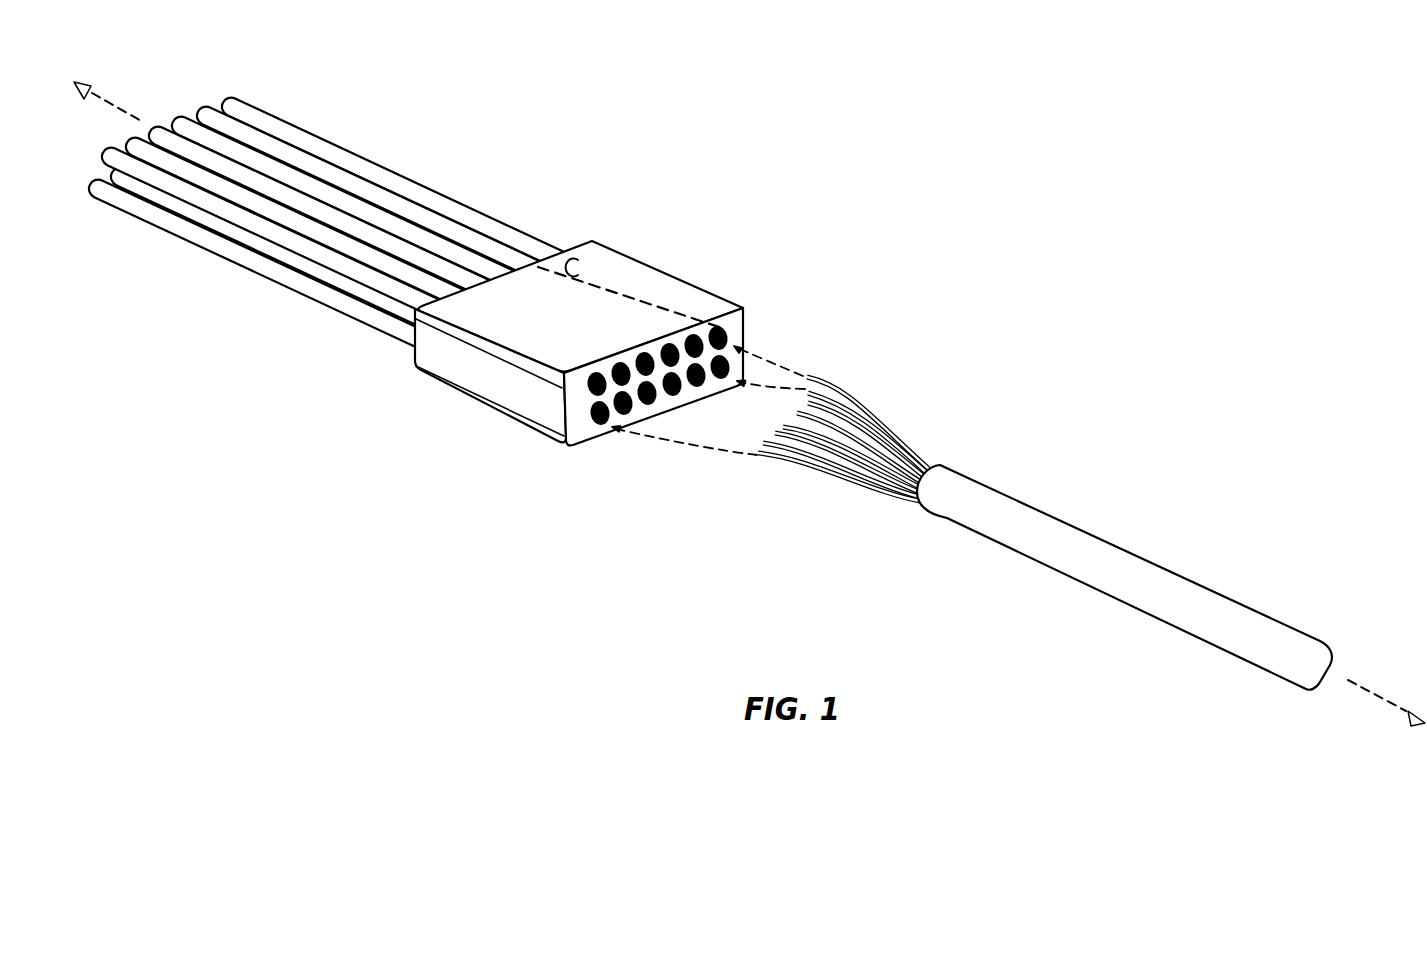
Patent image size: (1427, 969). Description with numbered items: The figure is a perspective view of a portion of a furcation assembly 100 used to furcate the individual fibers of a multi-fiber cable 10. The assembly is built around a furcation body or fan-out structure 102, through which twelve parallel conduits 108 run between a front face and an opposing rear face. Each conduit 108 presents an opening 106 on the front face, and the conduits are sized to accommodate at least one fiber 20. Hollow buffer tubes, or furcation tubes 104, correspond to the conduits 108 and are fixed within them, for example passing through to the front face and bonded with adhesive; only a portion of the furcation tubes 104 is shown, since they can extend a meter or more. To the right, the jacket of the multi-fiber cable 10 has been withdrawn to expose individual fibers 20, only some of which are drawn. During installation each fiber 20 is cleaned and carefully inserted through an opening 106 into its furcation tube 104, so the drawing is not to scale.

The furcation assembly 100 is at (538, 501).
The fan-out structure 102 is at (498, 407).
The furcation tube 104 is at (297, 165).
The opening 106 is at (735, 340).
The conduit 108 is at (648, 293).
The fiber 20 is at (858, 424).
The multi-fiber cable 10 is at (1122, 547).